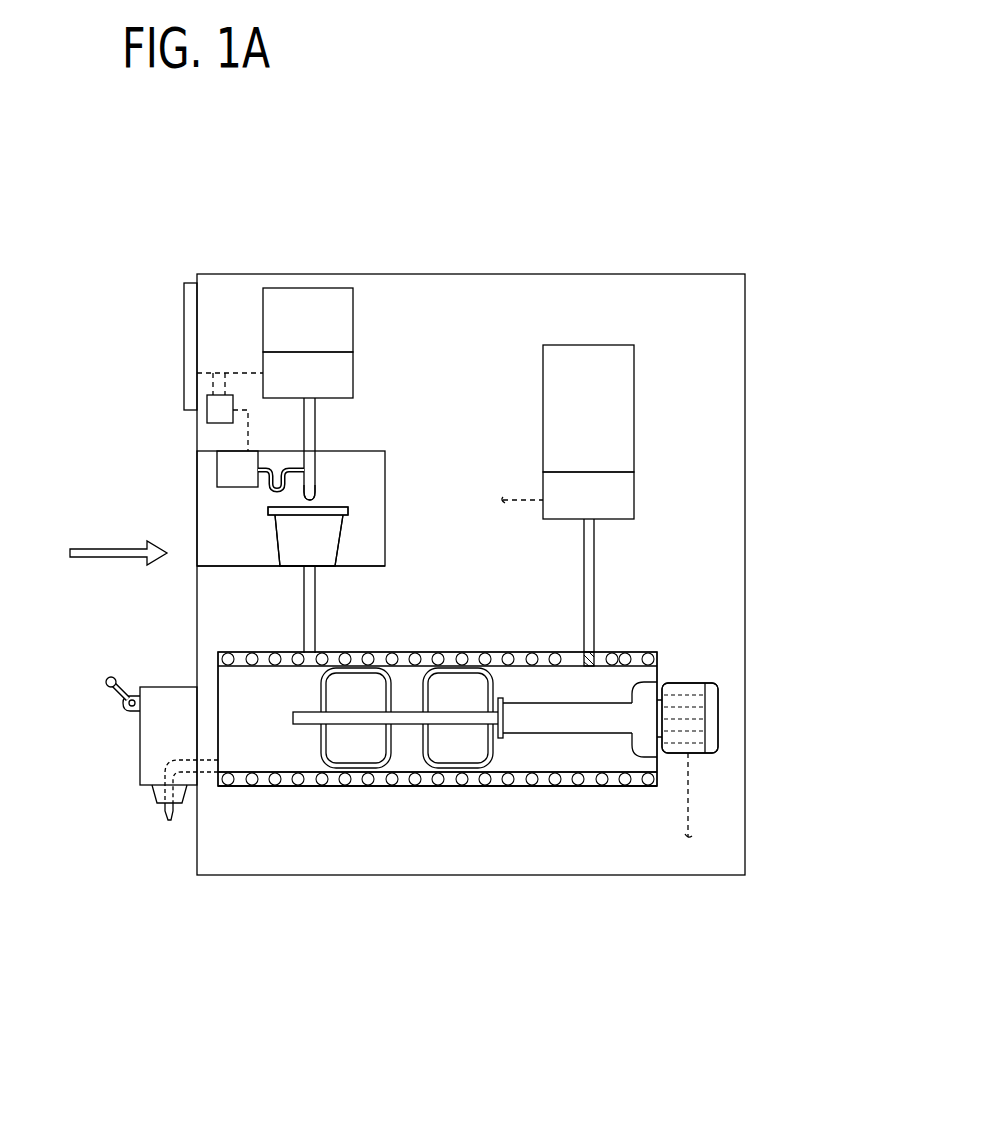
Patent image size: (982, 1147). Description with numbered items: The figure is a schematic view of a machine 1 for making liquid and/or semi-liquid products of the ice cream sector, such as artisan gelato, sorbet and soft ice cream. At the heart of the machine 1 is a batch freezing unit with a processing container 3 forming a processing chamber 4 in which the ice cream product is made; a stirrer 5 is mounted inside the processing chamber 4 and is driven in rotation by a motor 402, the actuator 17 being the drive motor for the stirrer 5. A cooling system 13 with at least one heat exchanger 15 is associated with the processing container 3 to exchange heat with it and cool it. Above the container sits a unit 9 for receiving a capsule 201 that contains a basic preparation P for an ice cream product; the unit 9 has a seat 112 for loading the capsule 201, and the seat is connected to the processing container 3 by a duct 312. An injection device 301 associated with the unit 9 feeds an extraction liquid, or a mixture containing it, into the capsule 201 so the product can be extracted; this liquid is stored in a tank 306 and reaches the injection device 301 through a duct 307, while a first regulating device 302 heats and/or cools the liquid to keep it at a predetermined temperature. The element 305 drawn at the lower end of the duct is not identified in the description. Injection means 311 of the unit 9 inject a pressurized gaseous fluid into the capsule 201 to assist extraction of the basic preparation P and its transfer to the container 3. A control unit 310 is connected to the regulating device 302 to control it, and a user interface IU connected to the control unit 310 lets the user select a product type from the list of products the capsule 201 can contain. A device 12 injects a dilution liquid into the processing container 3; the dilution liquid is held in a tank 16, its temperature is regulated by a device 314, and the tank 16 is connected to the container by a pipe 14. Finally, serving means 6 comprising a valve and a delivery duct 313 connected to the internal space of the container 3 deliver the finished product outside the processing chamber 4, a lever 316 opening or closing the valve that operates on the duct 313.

The machine 1 is at (661, 242).
The user interface IU is at (182, 338).
The control unit 310 is at (203, 422).
The injection means 311 is at (216, 467).
The tank 306 is at (324, 332).
The first regulating device 302 is at (324, 386).
The duct 307 is at (318, 425).
The piercing tip 305 is at (319, 492).
The unit for receiving a capsule 9 is at (387, 500).
The basic preparation P is at (306, 531).
The injection device 301 is at (319, 500).
The capsule 201 is at (341, 554).
The seat 112 is at (269, 567).
The duct 312 is at (319, 622).
The tank 16 is at (575, 417).
The device for regulating the temperature of the dilution liquid 314 is at (571, 508).
The pipe 14 is at (597, 559).
The device for injecting a dilution liquid 12 is at (594, 648).
The processing container 3 is at (284, 788).
The processing chamber 4 is at (437, 719).
The cooling system 13 is at (378, 788).
The heat exchanger 15 is at (527, 788).
The stirrer 5 is at (460, 783).
The motor 402 is at (691, 676).
The actuator 17 is at (690, 718).
The duct 313 is at (161, 819).
The serving means 6 is at (209, 773).
The lever 316 is at (116, 697).